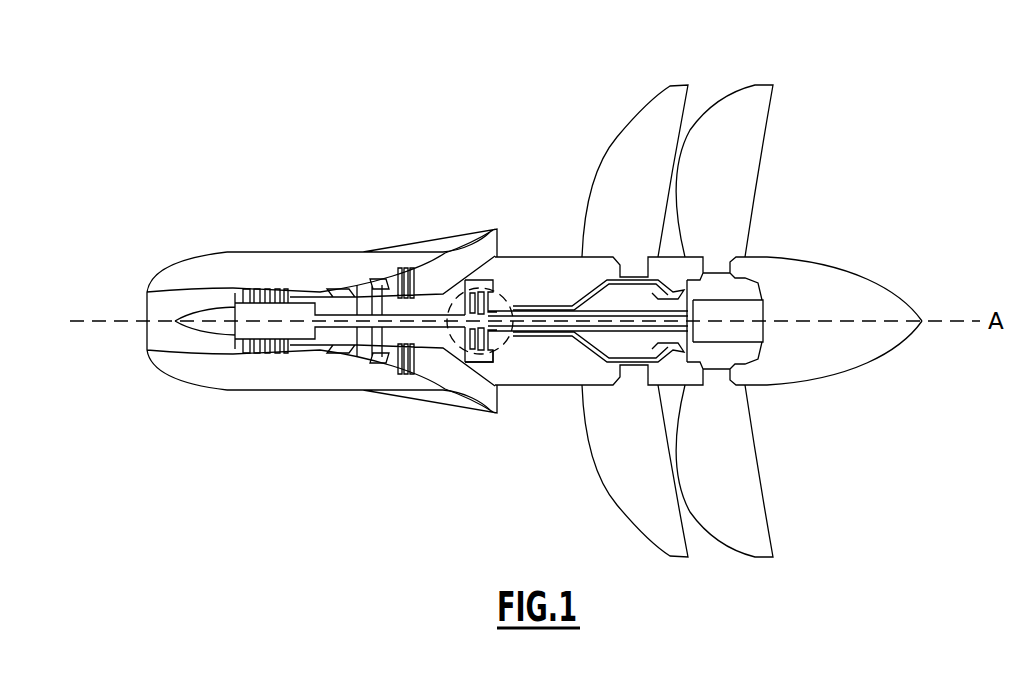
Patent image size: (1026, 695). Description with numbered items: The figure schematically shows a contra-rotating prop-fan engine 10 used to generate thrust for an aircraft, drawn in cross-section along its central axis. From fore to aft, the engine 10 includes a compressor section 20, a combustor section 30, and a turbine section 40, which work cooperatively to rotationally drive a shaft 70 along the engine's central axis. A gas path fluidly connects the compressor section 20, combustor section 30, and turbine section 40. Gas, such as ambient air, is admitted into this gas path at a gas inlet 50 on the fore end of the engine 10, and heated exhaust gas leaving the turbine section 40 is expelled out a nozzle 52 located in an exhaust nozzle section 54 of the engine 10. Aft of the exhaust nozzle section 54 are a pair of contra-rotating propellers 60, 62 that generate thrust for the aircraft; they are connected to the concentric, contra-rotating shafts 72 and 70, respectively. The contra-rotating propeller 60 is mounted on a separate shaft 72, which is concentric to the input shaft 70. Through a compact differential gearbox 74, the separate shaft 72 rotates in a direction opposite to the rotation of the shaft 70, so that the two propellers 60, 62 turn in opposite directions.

The contra-rotating prop-fan engine 10 is at (452, 73).
The compressor section 20 is at (247, 289).
The combustor section 30 is at (312, 290).
The turbine section 40 is at (398, 268).
The gas inlet 50 is at (146, 308).
The nozzle 52 is at (497, 238).
The exhaust nozzle section 54 is at (462, 232).
The contra-rotating propeller 60 is at (628, 118).
The contra-rotating propeller 62 is at (740, 92).
The shaft 70 is at (529, 318).
The separate shaft 72 is at (565, 305).
The compact differential gearbox 74 is at (497, 360).